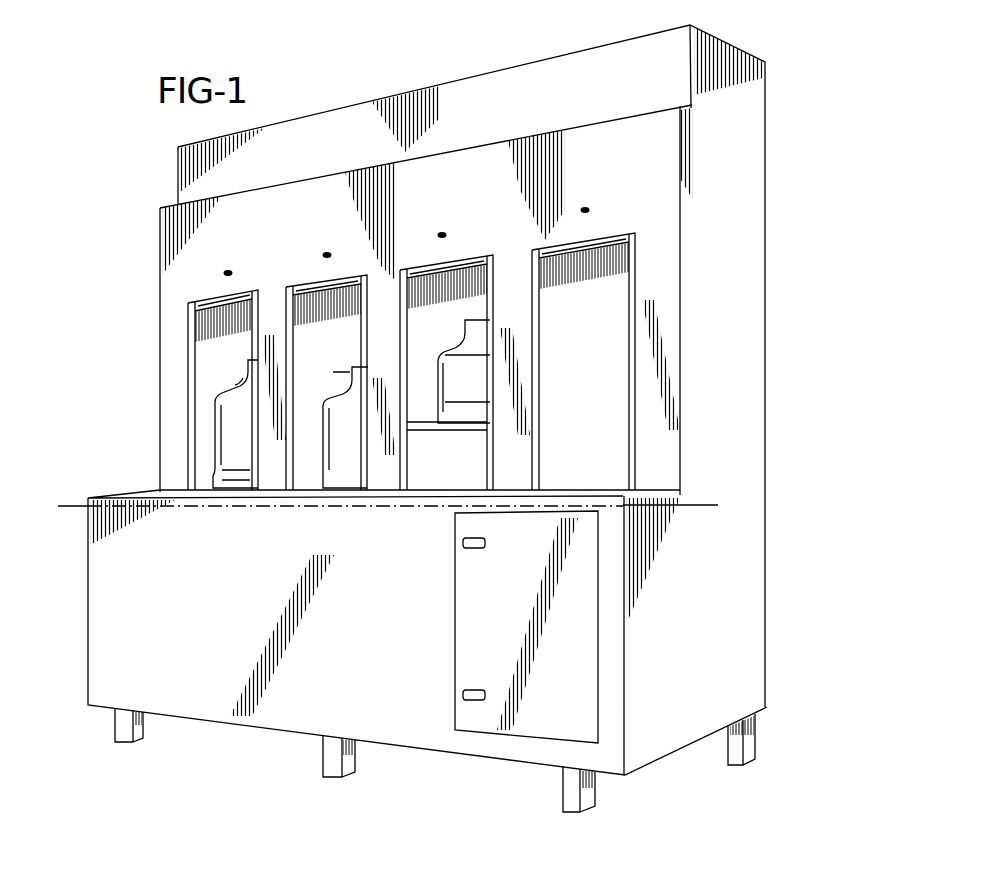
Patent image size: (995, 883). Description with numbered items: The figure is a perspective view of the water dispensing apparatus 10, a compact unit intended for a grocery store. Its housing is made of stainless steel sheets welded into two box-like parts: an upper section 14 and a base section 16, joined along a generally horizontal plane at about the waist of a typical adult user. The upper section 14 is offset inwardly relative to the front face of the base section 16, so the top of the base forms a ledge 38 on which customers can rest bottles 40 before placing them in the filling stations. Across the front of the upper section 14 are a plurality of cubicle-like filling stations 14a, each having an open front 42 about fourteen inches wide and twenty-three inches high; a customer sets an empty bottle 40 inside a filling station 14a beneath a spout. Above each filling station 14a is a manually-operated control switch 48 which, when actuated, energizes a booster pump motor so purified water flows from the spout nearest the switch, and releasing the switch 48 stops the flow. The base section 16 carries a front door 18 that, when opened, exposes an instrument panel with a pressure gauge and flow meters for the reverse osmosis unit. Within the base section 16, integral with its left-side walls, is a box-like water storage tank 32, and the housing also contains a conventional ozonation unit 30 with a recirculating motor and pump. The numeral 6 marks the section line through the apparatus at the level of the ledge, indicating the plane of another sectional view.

The water dispensing apparatus 10 is at (768, 381).
The upper section 14 is at (724, 223).
The filling stations 14a is at (321, 361).
The base section 16 is at (104, 592).
The front door 18 is at (530, 602).
The ozonation unit 30 is at (468, 385).
The water storage tank 32 is at (118, 681).
The ledge 38 is at (160, 493).
The bottles 40 is at (342, 462).
The open front 42 is at (594, 368).
The control switch 48 is at (326, 253).
The section line 6- 6 is at (58, 506).